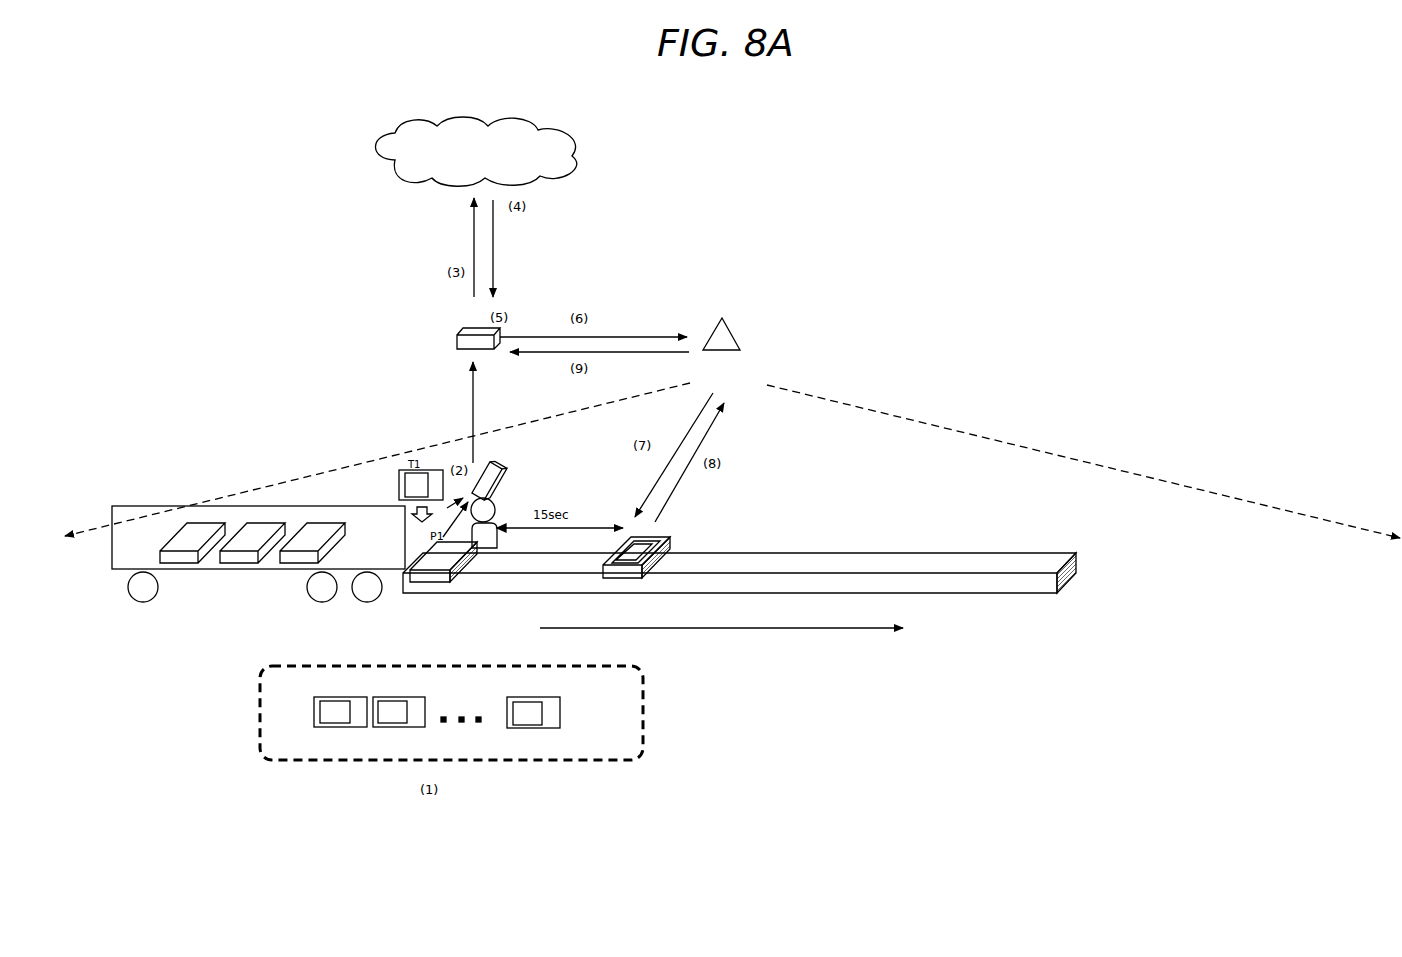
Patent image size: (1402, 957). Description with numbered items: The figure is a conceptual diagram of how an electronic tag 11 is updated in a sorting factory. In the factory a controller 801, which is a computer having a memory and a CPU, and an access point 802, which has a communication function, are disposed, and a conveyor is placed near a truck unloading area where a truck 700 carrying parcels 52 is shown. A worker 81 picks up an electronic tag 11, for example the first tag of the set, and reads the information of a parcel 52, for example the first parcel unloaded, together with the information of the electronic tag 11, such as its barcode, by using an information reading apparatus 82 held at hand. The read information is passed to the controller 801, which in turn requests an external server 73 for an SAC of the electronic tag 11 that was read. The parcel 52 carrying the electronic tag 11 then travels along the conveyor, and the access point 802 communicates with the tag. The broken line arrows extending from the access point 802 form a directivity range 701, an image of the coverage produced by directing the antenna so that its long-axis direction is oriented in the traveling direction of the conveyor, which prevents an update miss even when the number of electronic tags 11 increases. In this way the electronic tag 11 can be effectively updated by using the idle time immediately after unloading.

The external server 73 is at (583, 154).
The imaging area 701 is at (812, 213).
The controller 801 is at (456, 337).
The access point 802 is at (740, 333).
The truck 700 is at (155, 506).
The parcel 52 is at (200, 556).
The worker 81 is at (498, 505).
The information reading apparatus 82 is at (500, 470).
The electronic tag 11 is at (668, 536).